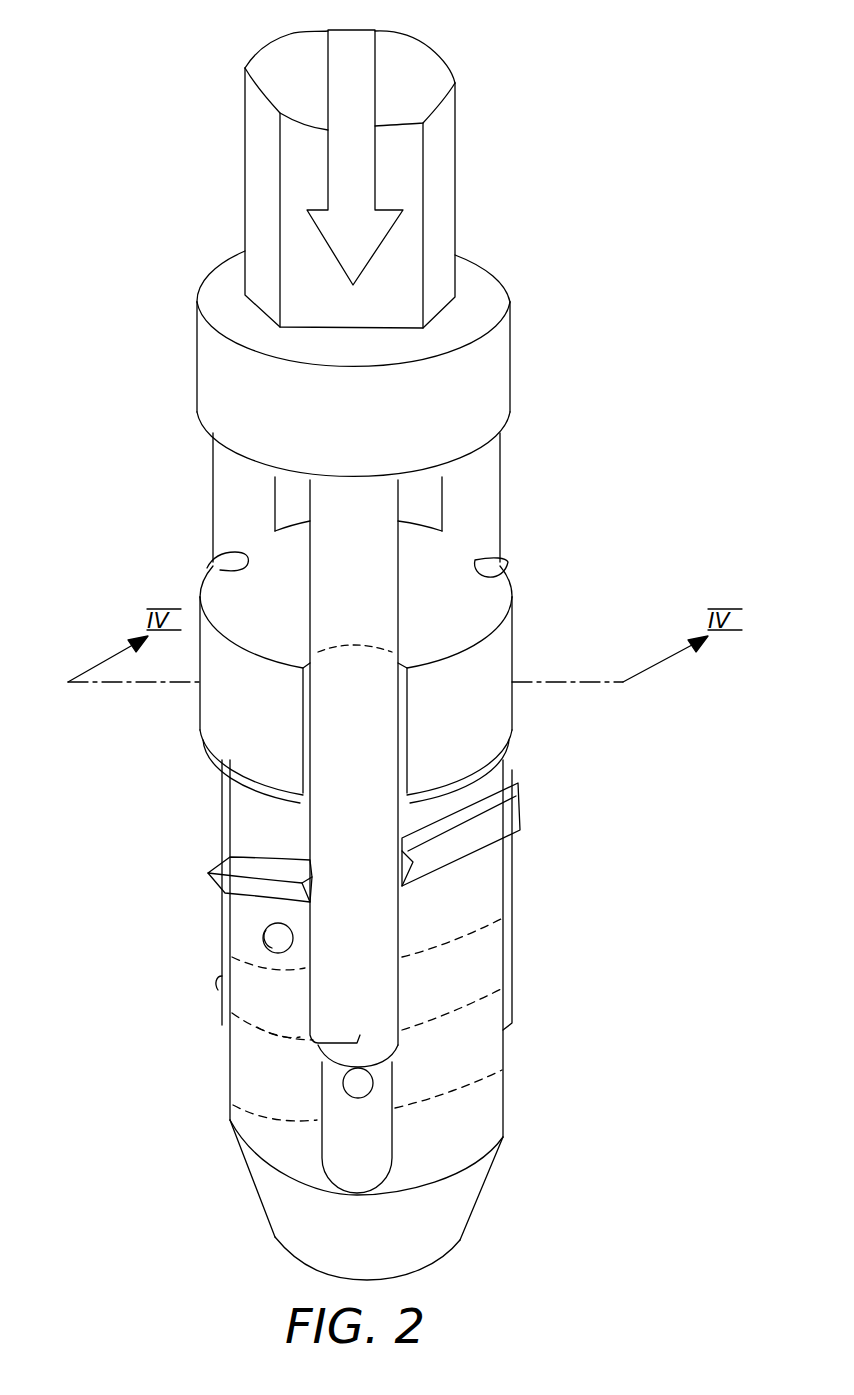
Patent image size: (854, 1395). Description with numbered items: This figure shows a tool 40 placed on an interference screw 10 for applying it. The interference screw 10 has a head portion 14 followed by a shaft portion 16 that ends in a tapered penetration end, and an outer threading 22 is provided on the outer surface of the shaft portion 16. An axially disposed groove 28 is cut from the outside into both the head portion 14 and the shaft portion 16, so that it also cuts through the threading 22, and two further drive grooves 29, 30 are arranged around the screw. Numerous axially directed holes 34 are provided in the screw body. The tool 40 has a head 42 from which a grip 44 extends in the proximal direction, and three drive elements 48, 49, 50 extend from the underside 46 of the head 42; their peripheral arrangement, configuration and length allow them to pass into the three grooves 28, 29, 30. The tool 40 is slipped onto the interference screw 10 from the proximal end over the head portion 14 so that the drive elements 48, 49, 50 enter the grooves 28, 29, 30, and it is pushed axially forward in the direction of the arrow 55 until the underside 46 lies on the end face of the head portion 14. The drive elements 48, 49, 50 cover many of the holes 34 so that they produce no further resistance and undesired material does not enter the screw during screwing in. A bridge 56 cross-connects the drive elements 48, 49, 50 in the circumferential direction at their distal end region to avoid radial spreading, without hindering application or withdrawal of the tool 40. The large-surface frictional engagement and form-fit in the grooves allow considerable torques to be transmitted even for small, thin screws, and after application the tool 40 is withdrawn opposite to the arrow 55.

The interference screw 10 is at (524, 1104).
The head portion 14 is at (225, 723).
The shaft portion 16 is at (485, 887).
The outer threading 22 is at (520, 780).
The axial groove 28 is at (383, 1147).
The drive groove 29 is at (212, 567).
The drive groove 30 is at (488, 567).
The axially directed bores or holes 34 is at (265, 933).
The tool 40 is at (405, 279).
The head 42 is at (495, 383).
The grip 44 is at (440, 152).
The underside 46 is at (412, 485).
The drive element 48 is at (358, 598).
The drive element 49 is at (228, 488).
The drive element 50 is at (475, 488).
The arrow 55 is at (345, 158).
The bridge 56 is at (218, 980).